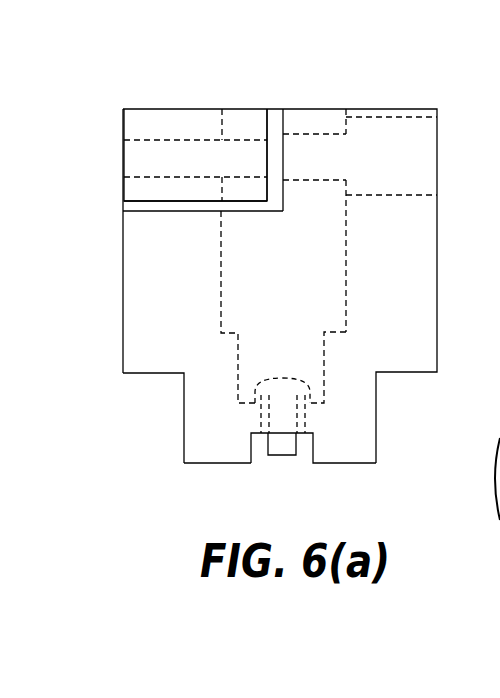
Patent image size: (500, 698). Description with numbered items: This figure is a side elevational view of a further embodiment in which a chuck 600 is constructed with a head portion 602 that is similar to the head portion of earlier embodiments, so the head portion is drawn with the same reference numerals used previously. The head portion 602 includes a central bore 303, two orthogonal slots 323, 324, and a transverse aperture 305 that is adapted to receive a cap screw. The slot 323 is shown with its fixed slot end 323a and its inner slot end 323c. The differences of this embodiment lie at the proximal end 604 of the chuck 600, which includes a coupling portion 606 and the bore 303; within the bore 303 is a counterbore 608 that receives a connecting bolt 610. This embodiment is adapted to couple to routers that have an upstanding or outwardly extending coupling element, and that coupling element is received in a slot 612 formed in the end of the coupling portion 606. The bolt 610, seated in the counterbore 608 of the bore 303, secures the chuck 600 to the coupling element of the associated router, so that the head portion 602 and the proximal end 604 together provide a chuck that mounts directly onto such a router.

The chuck 600 is at (402, 86).
The head portion 602 is at (134, 302).
The proximal end 604 is at (166, 411).
The coupling portion 606 is at (192, 442).
The slot 612 is at (313, 455).
The transverse aperture 305 is at (155, 140).
The orthogonal slot 324 is at (283, 122).
The orthogonal slot 323 is at (172, 213).
The fixed slot end 323a is at (194, 207).
The inner slot end 323c is at (277, 227).
The central bore 303 is at (346, 268).
The counterbore 608 is at (324, 378).
The connecting bolt 610 is at (290, 373).